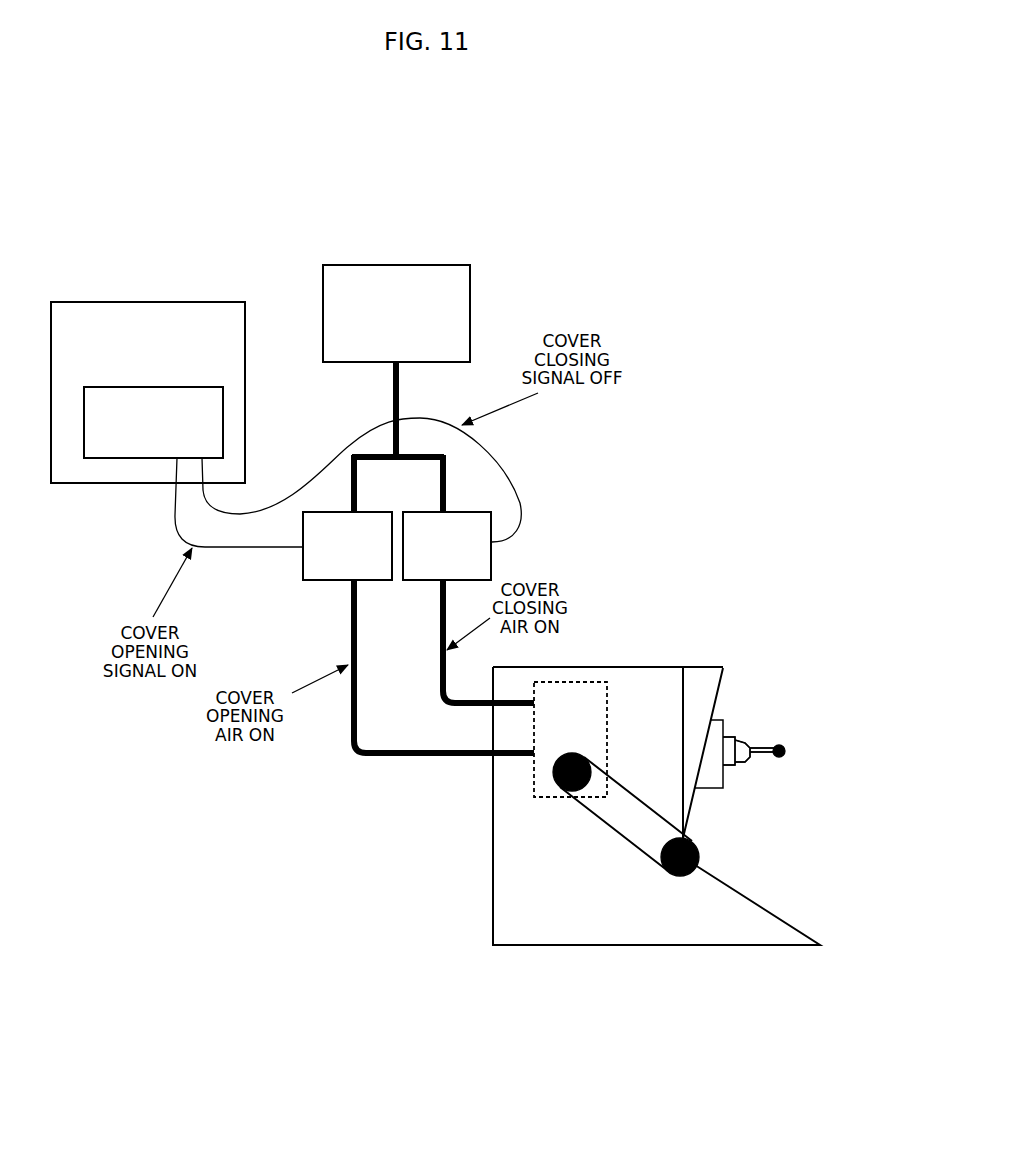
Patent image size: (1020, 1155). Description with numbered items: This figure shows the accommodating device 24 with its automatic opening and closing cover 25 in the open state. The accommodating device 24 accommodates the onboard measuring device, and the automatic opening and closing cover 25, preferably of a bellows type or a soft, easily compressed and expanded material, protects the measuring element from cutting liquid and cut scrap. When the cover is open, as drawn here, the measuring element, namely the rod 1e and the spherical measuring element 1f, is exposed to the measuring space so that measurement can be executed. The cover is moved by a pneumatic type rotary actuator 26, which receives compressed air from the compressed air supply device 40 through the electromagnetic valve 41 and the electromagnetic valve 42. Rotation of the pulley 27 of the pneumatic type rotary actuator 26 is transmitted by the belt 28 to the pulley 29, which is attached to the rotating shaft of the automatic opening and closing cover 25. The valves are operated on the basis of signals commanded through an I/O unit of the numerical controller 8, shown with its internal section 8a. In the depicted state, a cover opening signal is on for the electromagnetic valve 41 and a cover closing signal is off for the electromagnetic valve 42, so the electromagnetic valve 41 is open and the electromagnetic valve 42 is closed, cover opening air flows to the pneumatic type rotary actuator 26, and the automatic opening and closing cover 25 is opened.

The numerical controller 8 is at (147, 302).
The cover control section 8a is at (115, 458).
The compressed air supply device 40 is at (392, 265).
The electromagnetic valve 41 is at (302, 565).
The electromagnetic valve 42 is at (492, 558).
The accommodating device 24 is at (493, 888).
The automatic opening and closing cover 25 is at (705, 667).
The pneumatic type rotary actuator 26 is at (590, 681).
The pulley 27 is at (553, 772).
The belt 28 is at (616, 830).
The pulley 29 is at (686, 876).
The rod of the measuring element 1e is at (755, 740).
The spherical measuring element 1f is at (784, 744).